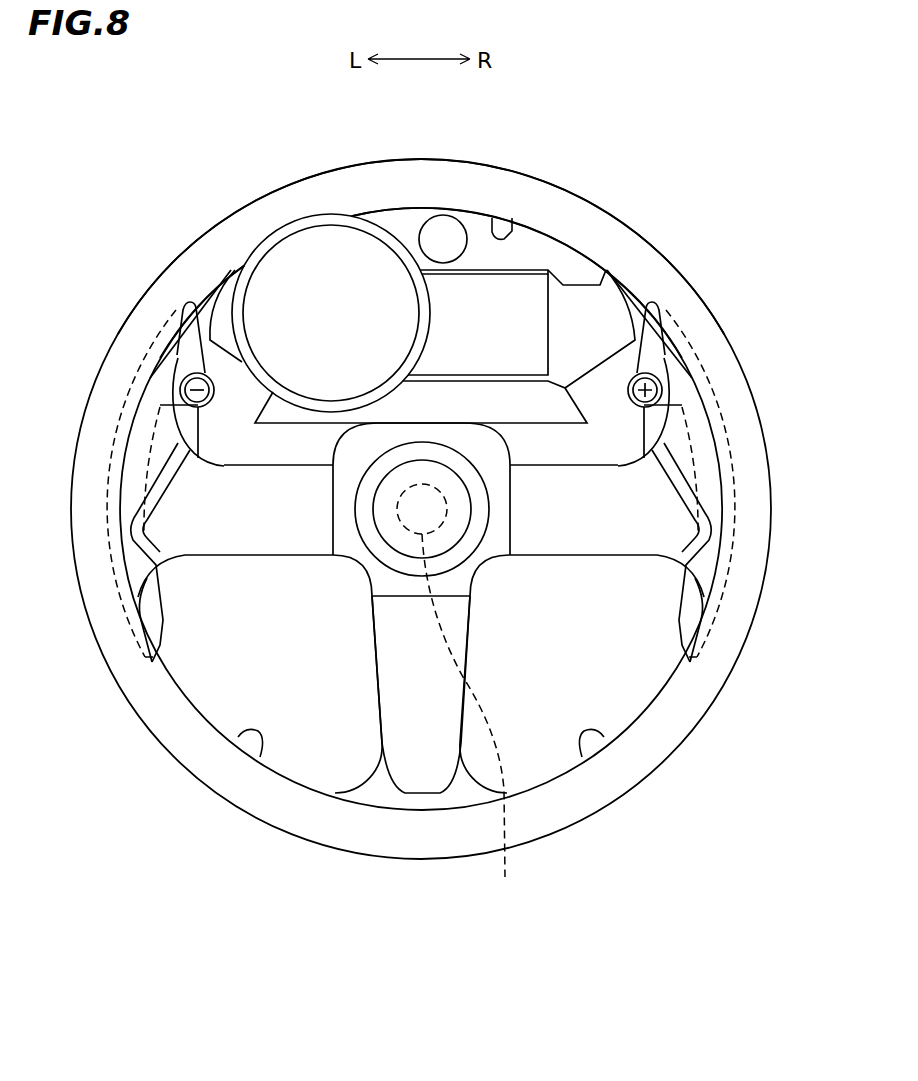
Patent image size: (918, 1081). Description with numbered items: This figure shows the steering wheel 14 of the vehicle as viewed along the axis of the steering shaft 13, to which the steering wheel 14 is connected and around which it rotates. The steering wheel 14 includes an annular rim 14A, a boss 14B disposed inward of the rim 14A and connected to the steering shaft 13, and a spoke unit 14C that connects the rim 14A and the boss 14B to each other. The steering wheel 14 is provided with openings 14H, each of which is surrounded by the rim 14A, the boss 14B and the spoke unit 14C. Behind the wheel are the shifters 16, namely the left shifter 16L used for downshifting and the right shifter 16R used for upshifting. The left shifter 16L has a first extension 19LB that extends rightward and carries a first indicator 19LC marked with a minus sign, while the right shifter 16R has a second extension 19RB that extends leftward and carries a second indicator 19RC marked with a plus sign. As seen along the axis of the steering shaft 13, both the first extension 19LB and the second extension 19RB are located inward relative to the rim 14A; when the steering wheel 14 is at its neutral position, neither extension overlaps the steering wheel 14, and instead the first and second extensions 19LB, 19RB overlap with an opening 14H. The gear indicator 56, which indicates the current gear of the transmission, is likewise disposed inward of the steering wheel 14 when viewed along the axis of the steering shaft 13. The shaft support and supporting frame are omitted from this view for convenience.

The steering shaft 13 is at (457, 695).
The steering wheel 14 is at (580, 196).
The annular rim 14A is at (390, 182).
The boss 14B is at (475, 562).
The spoke unit 14C is at (236, 535).
The openings 14H is at (493, 233).
The shifters 16 is at (420, 472).
The left shifter 16L is at (129, 393).
The right shifter 16R is at (713, 393).
The first extension 19LB is at (203, 372).
The second extension 19RB is at (639, 372).
The first indicator 19LC is at (233, 537).
The second indicator 19RC is at (609, 537).
The gear indicator 56 is at (320, 283).